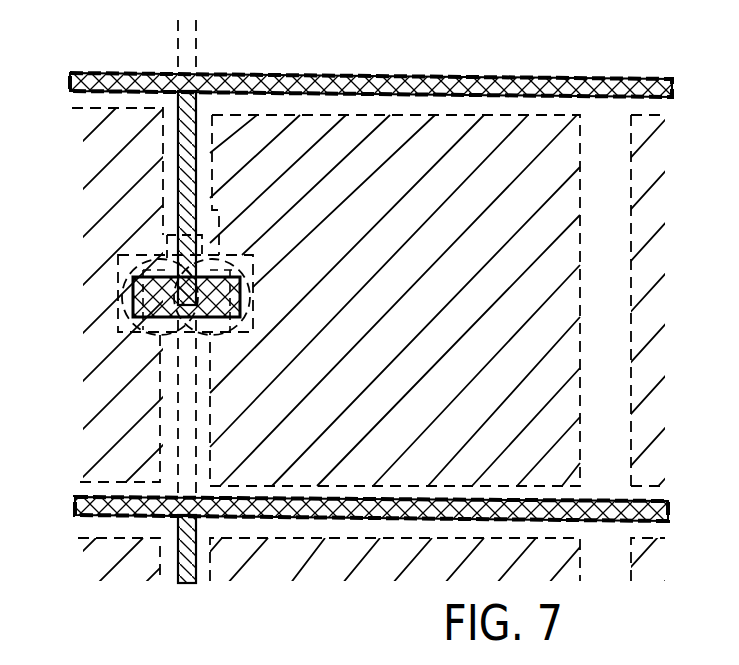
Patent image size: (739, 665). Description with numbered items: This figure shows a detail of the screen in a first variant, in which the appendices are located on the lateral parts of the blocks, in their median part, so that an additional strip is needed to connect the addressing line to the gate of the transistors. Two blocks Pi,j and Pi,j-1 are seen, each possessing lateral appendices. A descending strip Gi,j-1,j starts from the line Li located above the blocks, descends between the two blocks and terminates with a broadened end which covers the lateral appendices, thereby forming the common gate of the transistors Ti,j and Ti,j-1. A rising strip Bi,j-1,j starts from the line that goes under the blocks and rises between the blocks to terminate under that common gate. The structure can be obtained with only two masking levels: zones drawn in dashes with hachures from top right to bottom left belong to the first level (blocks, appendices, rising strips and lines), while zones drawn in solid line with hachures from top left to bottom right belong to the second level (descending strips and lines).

The line Li is at (72, 81).
The block Pi,j-1 is at (120, 108).
The block Pi,j is at (514, 113).
The descending strip Gi,j-1,j is at (192, 128).
The rising strip Bi,j-1,j is at (195, 413).
The transistor Ti,j is at (248, 262).
The transistor Ti,j-1 is at (125, 318).